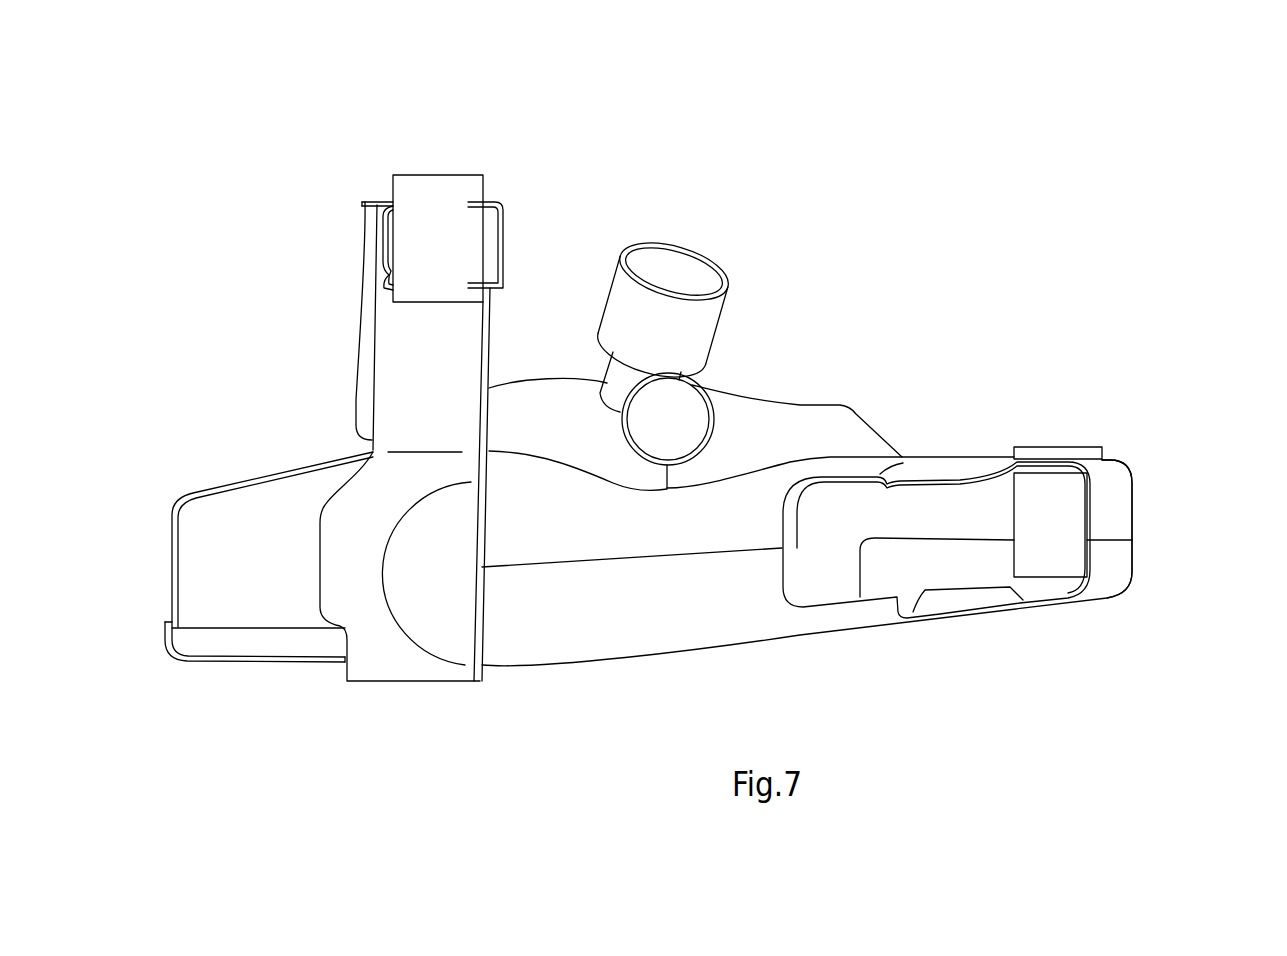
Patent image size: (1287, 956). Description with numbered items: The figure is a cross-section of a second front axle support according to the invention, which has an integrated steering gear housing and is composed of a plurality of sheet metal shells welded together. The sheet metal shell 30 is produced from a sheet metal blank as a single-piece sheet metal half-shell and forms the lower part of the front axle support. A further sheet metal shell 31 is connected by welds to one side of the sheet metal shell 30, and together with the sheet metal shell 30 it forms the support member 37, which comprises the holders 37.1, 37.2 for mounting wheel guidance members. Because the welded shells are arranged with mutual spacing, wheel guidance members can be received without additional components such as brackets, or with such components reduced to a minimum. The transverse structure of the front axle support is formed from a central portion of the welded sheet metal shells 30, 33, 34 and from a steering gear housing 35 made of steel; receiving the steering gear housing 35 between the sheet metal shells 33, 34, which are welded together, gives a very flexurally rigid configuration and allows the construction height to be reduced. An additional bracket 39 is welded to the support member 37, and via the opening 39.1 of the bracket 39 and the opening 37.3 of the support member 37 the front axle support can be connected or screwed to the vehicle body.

The sheet metal shell 30 is at (627, 630).
The sheet metal shell 31 is at (1113, 493).
The sheet metal shell 33 is at (817, 423).
The sheet metal shell 34 is at (549, 400).
The steering gear housing 35 is at (710, 408).
The support member 37 is at (1167, 523).
The holder 37.1 is at (957, 560).
The holder 37.2 is at (253, 598).
The opening 37.3 is at (1062, 433).
The bracket 39 is at (368, 350).
The opening 39.1 is at (442, 165).